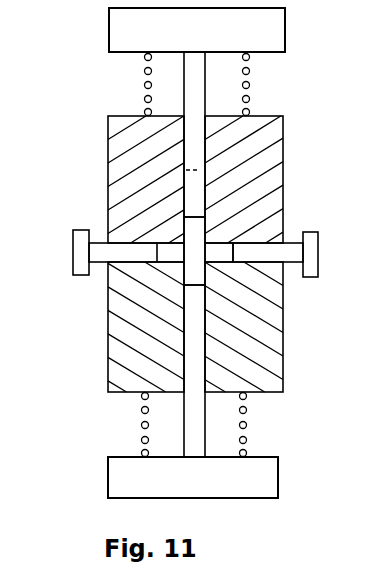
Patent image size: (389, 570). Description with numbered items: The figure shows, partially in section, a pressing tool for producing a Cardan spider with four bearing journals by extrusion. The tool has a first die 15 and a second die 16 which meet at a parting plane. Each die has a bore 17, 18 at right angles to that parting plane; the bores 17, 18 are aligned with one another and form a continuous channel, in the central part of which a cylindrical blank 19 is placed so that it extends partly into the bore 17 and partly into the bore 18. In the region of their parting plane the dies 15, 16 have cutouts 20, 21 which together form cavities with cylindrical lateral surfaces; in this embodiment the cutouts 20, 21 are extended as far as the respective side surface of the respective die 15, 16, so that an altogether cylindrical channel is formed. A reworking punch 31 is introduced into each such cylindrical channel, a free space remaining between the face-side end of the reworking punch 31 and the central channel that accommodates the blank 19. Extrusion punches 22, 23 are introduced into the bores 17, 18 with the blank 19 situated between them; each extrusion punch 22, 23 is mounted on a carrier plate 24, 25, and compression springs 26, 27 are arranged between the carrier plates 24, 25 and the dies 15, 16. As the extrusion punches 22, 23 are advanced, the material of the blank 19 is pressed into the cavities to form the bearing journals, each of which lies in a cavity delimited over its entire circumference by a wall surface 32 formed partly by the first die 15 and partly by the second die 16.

The first die 15 is at (233, 183).
The second die 16 is at (252, 329).
The bore 17 is at (284, 143).
The bore 18 is at (182, 335).
The cylindrical blank 19 is at (207, 272).
The cutout 20 is at (180, 247).
The cutout 21 is at (181, 255).
The extrusion punch 22 is at (184, 151).
The extrusion punch 23 is at (186, 352).
The carrier plate 24 is at (275, 40).
The carrier plate 25 is at (270, 483).
The compression spring 26 is at (250, 82).
The compression spring 27 is at (248, 423).
The reworking punch 31 is at (73, 276).
The wall surface 32 is at (285, 207).